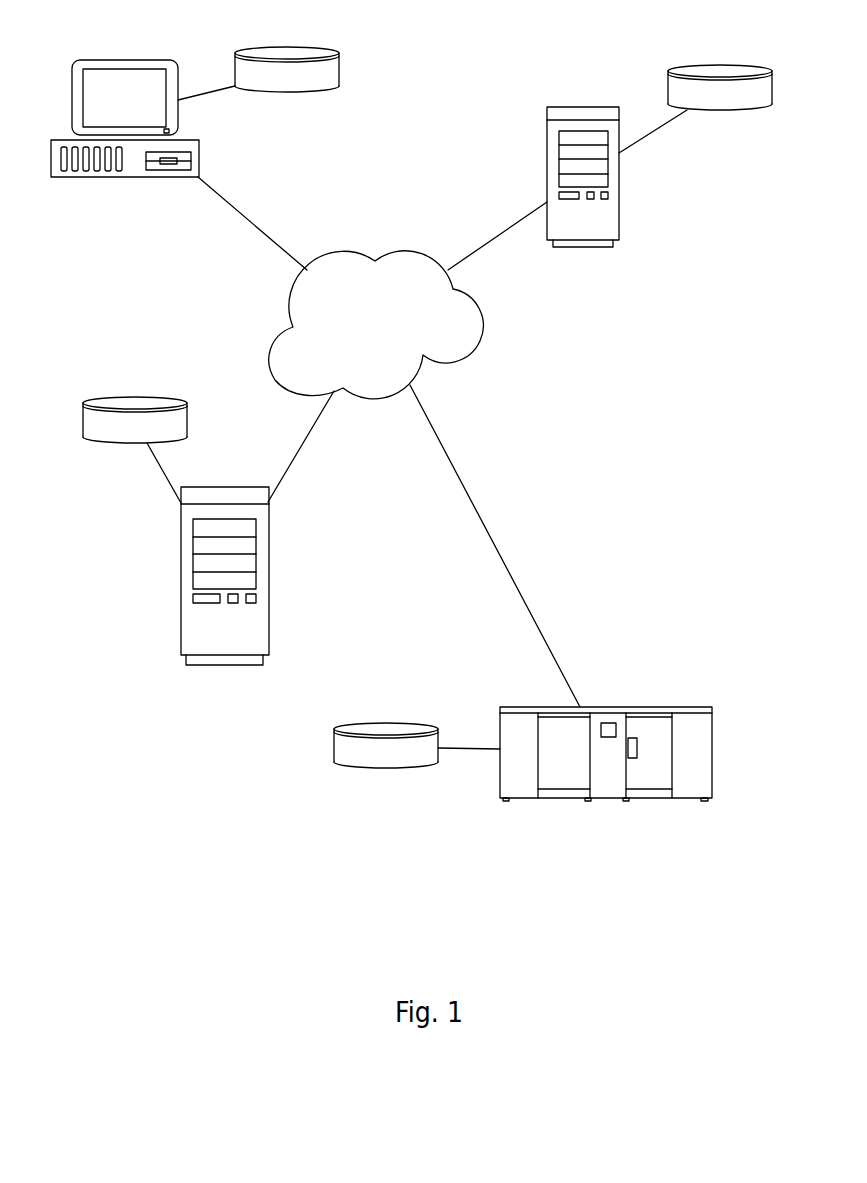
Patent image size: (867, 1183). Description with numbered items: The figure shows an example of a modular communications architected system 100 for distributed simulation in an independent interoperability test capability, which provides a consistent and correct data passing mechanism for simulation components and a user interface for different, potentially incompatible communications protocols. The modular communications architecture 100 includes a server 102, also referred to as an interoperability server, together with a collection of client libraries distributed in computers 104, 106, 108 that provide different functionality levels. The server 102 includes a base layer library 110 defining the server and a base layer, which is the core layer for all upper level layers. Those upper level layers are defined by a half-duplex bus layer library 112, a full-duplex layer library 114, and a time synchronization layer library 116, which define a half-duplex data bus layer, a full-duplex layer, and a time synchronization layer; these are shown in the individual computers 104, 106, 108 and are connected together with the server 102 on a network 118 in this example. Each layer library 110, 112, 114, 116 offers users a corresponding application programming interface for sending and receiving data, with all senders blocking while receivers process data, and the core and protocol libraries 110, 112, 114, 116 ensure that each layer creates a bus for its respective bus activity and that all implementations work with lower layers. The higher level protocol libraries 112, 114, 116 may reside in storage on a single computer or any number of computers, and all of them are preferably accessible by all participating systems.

The modular communications architected system 100 is at (638, 872).
The server 102 is at (181, 552).
The computer 104 is at (98, 60).
The computer 106 is at (547, 147).
The computer 108 is at (712, 730).
The base layer library 110 is at (115, 398).
The half-duplex bus layer library 112 is at (340, 63).
The full-duplex layer library 114 is at (668, 70).
The time synchronization layer library 116 is at (392, 723).
The network 118 is at (377, 259).